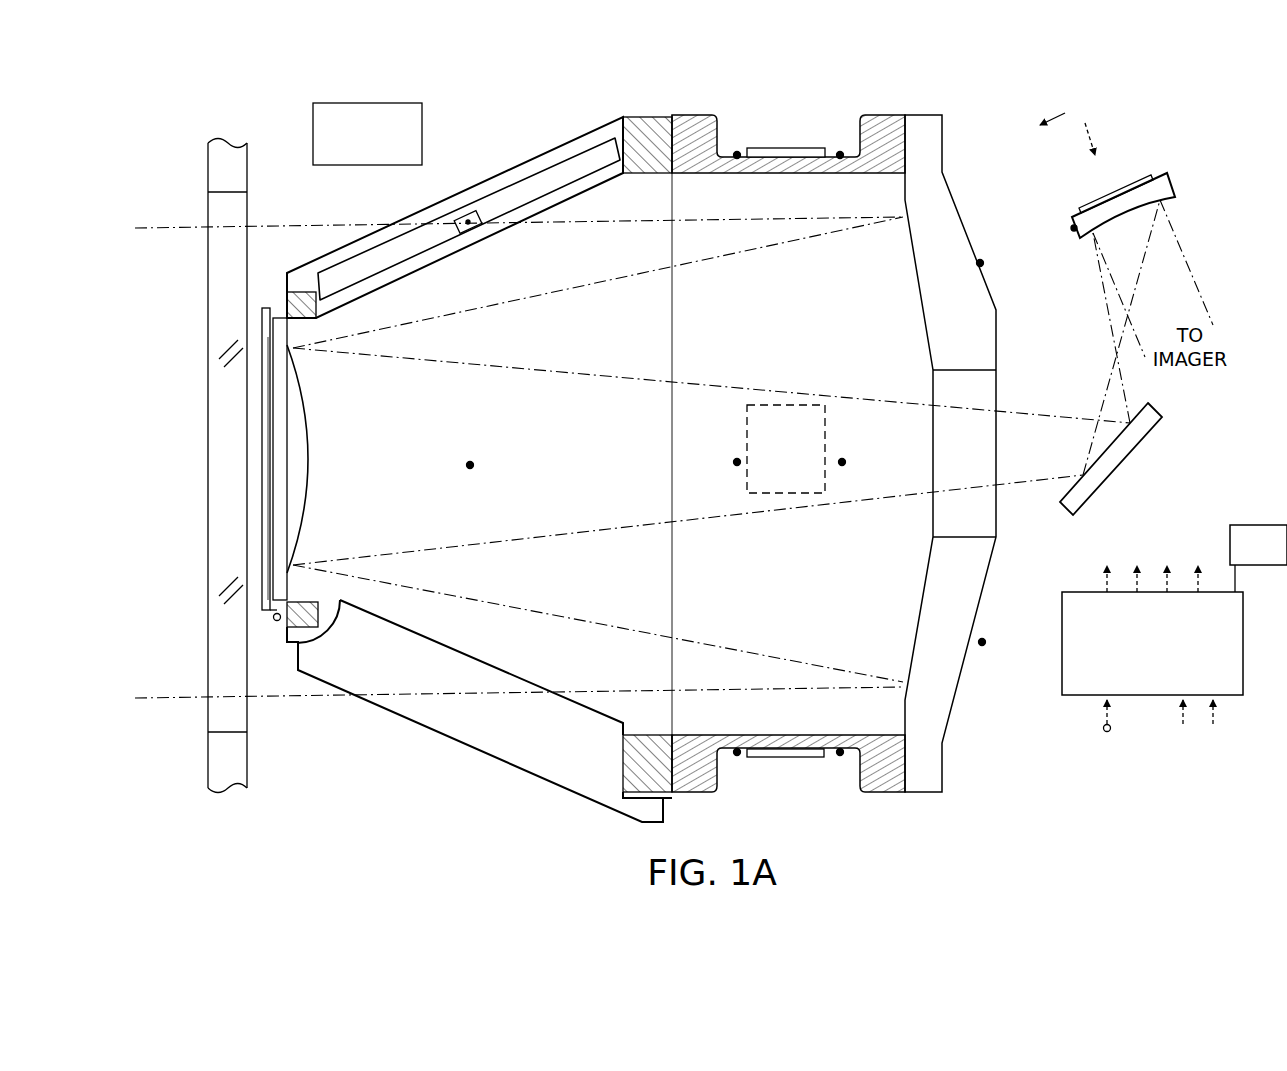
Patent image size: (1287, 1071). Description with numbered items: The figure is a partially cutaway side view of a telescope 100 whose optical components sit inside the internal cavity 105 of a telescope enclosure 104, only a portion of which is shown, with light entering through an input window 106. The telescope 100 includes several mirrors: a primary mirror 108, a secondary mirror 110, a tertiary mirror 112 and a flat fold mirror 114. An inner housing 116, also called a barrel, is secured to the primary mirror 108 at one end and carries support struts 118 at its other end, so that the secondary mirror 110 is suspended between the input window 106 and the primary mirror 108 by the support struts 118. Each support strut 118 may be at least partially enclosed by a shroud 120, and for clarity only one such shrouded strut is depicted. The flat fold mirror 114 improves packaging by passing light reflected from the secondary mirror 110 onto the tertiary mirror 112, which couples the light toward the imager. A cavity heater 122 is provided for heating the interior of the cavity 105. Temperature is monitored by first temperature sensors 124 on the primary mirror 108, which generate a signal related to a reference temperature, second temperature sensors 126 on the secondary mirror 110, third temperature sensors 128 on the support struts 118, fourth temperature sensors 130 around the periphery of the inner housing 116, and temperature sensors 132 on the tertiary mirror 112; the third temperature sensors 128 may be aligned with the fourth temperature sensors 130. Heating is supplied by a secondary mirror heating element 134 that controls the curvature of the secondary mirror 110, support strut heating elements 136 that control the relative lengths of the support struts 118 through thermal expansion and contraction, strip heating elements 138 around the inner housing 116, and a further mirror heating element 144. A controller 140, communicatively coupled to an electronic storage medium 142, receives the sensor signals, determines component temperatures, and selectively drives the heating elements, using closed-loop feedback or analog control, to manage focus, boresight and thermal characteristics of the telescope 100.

The telescope 100 is at (1074, 124).
The telescope enclosure 104 is at (208, 156).
The internal cavity 105 is at (620, 492).
The input window 106 is at (208, 471).
The primary mirror 108 is at (953, 703).
The secondary mirror 110 is at (306, 490).
The tertiary mirror 112 is at (1163, 172).
The flat fold mirror 114 is at (1162, 417).
The inner housing 116 is at (690, 793).
The support strut 118 is at (479, 215).
The shroud 120 is at (478, 672).
The cavity heater 122 is at (313, 135).
The first temperature sensor 124 is at (983, 263).
The second temperature sensor 126 is at (277, 620).
The third temperature sensor 128 is at (470, 228).
The fourth temperature sensor 130 is at (737, 150).
The temperature sensor 132 is at (1072, 228).
The secondary mirror heating element 134 is at (265, 309).
The support strut heating element 136 is at (552, 178).
The strip heating element 138 is at (788, 148).
The controller 140 is at (1133, 669).
The electronic storage medium 142 is at (1277, 556).
The mirror heating element 144 is at (1088, 200).